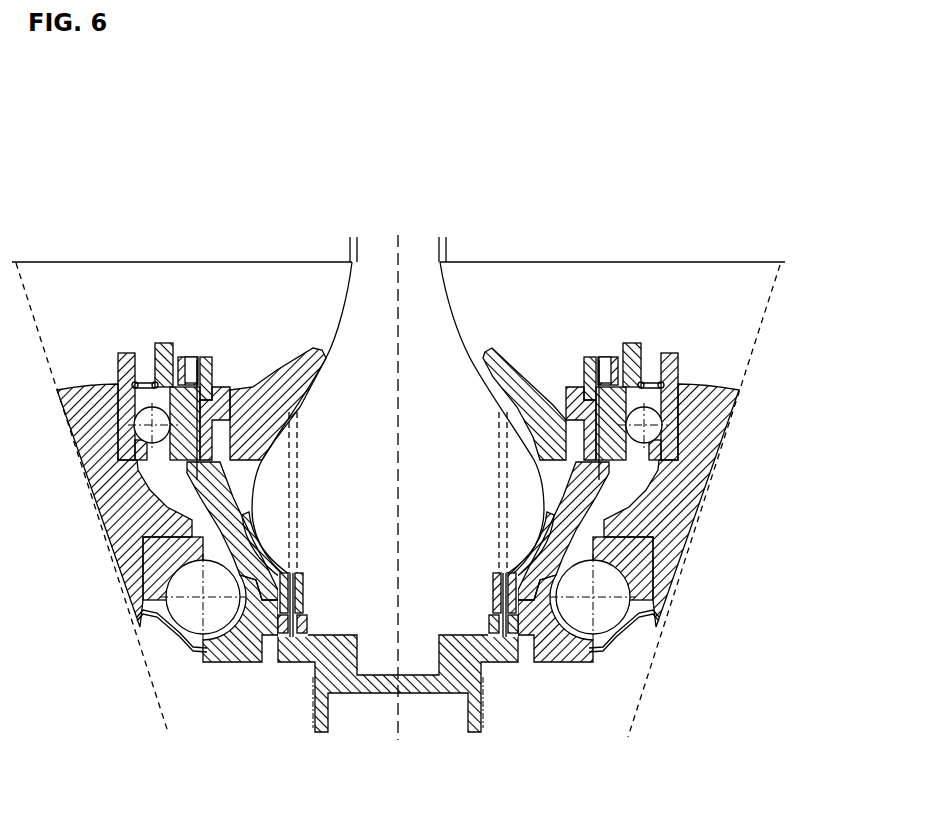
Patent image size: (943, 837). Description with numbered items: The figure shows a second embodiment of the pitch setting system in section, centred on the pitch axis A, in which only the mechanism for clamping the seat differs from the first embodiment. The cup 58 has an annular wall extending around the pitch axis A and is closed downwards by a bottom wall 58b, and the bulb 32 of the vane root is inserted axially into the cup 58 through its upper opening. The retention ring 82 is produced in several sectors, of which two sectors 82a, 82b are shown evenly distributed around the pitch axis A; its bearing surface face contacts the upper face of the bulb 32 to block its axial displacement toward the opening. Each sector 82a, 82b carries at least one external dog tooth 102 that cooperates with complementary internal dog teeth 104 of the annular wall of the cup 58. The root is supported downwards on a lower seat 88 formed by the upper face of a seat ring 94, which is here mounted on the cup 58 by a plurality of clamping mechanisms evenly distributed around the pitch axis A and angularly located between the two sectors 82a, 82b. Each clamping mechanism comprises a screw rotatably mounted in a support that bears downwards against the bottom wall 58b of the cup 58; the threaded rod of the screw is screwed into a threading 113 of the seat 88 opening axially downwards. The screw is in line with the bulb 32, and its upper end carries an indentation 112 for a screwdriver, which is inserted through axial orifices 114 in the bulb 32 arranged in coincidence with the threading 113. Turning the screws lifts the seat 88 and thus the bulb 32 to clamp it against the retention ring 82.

The sector 82a is at (270, 373).
The retention ring 82 is at (290, 385).
The bulb 32 is at (540, 427).
The sector 82b is at (547, 393).
The internal dog teeth 104 is at (683, 358).
The lower seat 88 is at (289, 576).
The indentation 112 is at (267, 557).
The axial orifices 114 is at (505, 513).
The external dog tooth 102 is at (590, 524).
The cup 58 is at (655, 545).
The seat ring 94 is at (233, 663).
The bottom wall 58b is at (333, 697).
The threading 113 is at (583, 653).
The pitch axis A is at (400, 720).